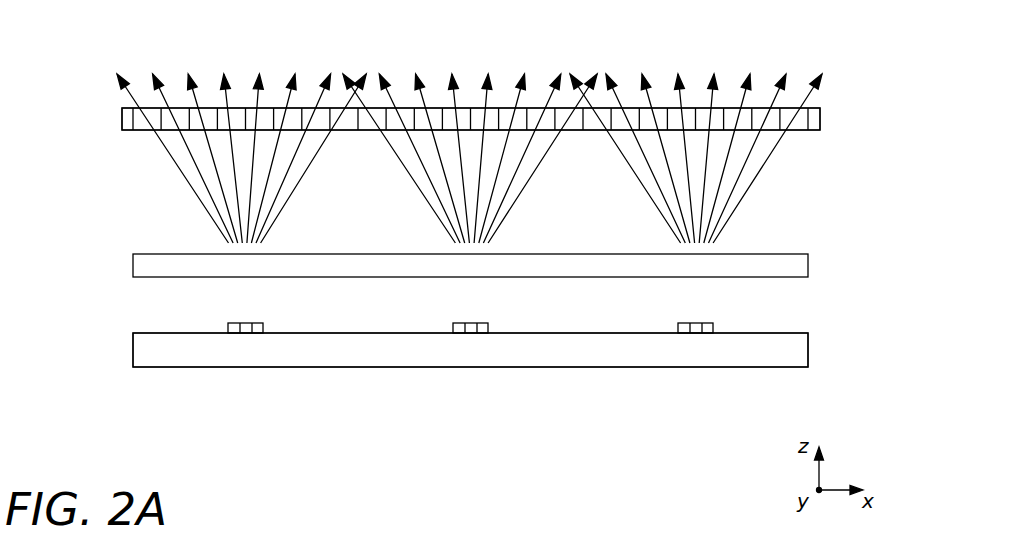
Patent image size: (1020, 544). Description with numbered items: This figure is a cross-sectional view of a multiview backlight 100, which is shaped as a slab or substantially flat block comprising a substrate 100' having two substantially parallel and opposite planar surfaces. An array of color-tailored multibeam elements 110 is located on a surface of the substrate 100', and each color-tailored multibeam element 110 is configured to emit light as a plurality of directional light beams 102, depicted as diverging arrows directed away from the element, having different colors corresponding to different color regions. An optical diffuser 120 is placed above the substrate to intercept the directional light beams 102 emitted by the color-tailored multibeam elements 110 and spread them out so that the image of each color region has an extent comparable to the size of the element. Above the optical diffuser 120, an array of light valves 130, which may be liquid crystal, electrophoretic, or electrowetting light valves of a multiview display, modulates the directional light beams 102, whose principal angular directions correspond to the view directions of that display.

The multiview backlight 100 is at (512, 237).
The substrate 100' is at (526, 351).
The directional light beams 102 is at (820, 152).
The color-tailored multibeam element 110 is at (245, 338).
The optical diffuser 120 is at (808, 262).
The light valves 130 is at (108, 113).